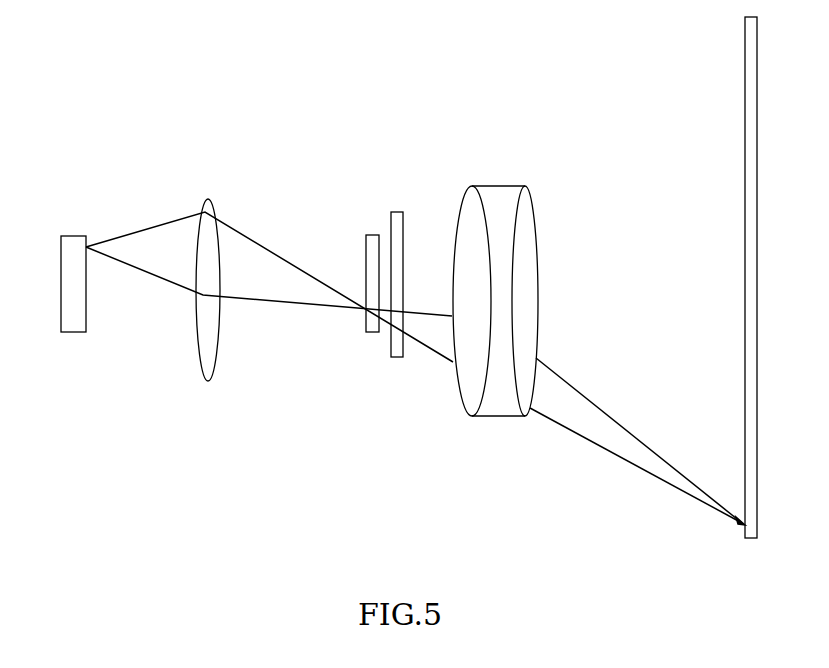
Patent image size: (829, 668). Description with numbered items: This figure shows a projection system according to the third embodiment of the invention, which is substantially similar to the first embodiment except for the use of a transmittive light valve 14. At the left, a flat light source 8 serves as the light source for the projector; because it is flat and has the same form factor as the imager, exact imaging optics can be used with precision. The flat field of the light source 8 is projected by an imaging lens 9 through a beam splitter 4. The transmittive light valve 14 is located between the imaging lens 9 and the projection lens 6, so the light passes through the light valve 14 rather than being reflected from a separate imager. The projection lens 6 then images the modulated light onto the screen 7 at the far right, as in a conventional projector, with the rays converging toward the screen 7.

The flat light source 8 is at (73, 332).
The imaging lens 9 is at (208, 381).
The beam splitter 4 is at (367, 332).
The transmittive light valve 14 is at (400, 357).
The projection lens 6 is at (489, 186).
The screen 7 is at (745, 285).